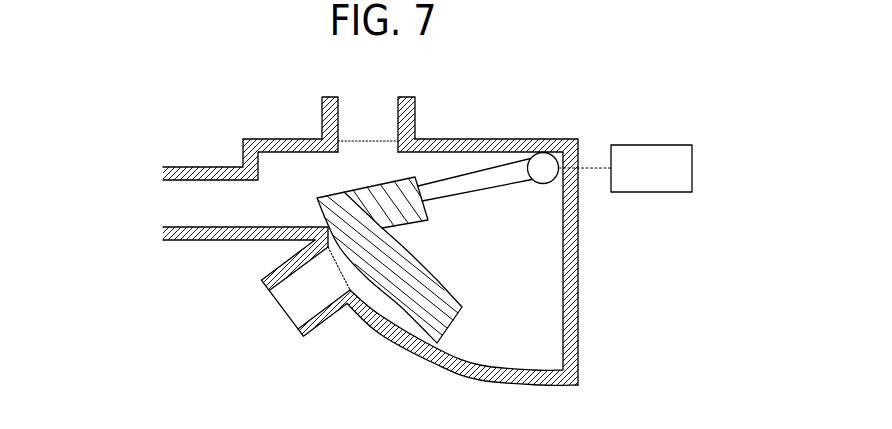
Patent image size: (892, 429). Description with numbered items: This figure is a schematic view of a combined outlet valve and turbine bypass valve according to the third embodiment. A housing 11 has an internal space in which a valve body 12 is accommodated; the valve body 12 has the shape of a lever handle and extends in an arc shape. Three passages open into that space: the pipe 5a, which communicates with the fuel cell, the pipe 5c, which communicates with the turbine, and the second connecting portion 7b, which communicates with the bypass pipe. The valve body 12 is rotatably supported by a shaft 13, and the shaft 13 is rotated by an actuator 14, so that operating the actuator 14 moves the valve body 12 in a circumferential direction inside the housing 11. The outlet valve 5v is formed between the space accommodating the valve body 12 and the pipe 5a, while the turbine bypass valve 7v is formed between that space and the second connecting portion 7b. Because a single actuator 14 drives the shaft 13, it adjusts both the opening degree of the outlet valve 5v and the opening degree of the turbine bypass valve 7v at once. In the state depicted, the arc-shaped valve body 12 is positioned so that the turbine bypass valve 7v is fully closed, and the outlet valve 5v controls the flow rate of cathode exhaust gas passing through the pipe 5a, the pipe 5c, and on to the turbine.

The housing 11 is at (575, 269).
The valve body 12 is at (400, 293).
The shaft 13 is at (543, 166).
The actuator 14 is at (692, 168).
The pipe 5a is at (367, 113).
The outlet valve 5v is at (368, 140).
The pipe 5c is at (195, 205).
The second connecting portion 7b is at (312, 300).
The turbine bypass valve 7v is at (340, 270).